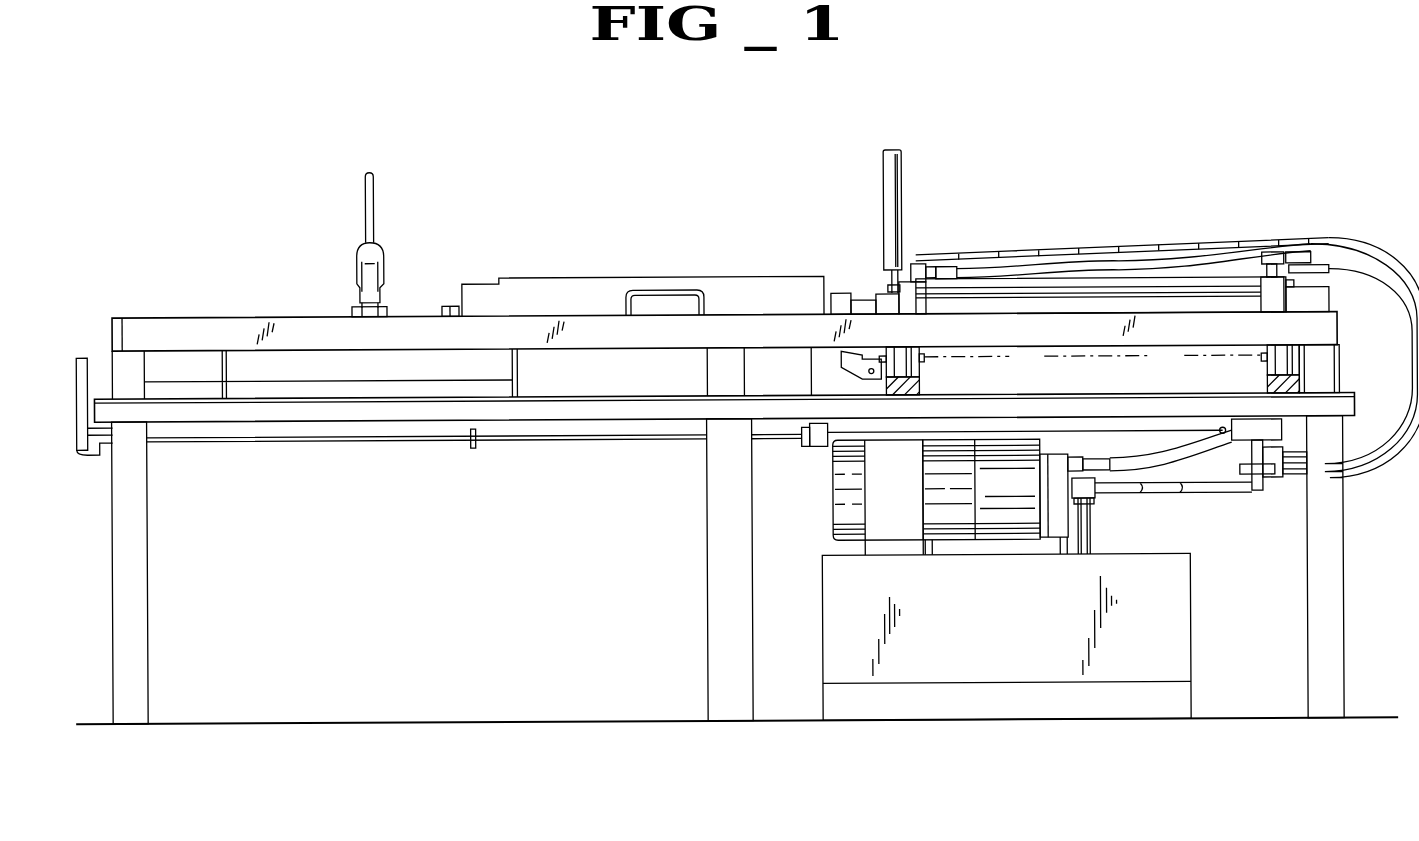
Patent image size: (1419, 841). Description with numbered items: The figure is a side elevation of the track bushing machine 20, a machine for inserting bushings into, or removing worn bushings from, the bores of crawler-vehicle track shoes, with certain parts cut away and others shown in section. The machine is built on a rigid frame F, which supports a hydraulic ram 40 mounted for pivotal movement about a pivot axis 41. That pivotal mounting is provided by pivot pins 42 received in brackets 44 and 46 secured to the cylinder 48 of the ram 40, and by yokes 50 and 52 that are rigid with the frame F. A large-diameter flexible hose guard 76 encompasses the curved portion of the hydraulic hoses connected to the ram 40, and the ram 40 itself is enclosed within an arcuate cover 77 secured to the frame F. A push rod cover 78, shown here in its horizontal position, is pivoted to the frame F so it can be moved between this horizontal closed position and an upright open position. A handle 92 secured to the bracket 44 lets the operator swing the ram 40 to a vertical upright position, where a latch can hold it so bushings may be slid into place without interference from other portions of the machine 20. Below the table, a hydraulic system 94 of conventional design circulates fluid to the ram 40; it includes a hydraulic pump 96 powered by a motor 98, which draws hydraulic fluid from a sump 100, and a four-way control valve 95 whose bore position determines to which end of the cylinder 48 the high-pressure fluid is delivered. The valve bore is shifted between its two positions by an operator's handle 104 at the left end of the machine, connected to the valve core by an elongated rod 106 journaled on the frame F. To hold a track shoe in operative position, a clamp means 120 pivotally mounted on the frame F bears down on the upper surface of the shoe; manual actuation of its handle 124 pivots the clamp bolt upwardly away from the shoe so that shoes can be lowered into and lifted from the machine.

The track bushing machine 20 is at (1068, 167).
The hydraulic ram 40 is at (1027, 293).
The pivot axis 41 is at (987, 360).
The pivot pins 42 is at (922, 362).
The bracket 44 is at (901, 313).
The bracket 46 is at (1285, 309).
The cylinder 48 is at (1052, 309).
The yoke 50 is at (886, 355).
The yoke 52 is at (1302, 368).
The flexible hose guard 76 is at (1357, 257).
The arcuate cover 77 is at (1119, 246).
The push rod cover 78 is at (621, 283).
The handle 92 is at (885, 186).
The hydraulic system 94 is at (1210, 502).
The four-way control valve 95 is at (1240, 446).
The hydraulic pump 96 is at (1018, 489).
The motor 98 is at (907, 493).
The sump 100 is at (1014, 622).
The operator's handle 104 is at (80, 353).
The elongated rod 106 is at (575, 437).
The clamp means 120 is at (348, 306).
The handle 124 is at (365, 204).
The frame F is at (700, 568).